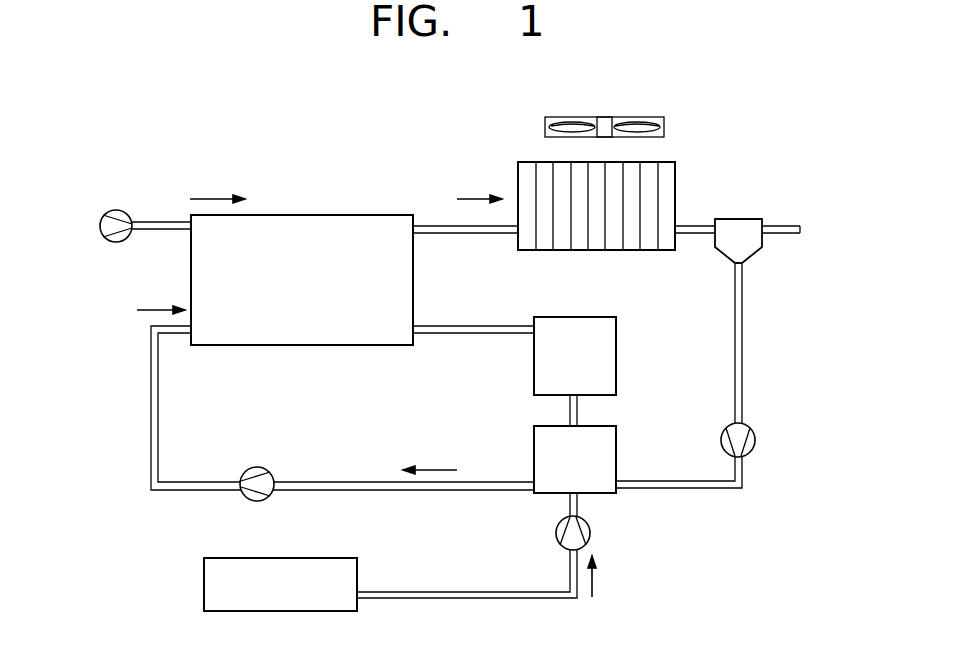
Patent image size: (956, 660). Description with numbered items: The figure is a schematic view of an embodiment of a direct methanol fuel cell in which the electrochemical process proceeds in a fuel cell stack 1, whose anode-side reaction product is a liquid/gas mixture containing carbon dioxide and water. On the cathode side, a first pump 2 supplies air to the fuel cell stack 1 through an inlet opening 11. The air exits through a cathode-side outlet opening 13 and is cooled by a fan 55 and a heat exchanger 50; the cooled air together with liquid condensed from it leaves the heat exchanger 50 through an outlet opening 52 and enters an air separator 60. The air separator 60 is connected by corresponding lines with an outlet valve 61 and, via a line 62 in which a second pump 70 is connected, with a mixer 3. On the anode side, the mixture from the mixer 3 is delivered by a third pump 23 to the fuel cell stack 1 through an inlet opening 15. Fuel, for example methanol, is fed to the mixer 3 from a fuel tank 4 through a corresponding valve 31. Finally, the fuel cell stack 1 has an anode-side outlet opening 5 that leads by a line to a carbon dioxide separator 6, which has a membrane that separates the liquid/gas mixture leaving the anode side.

The fuel cell stack 1 is at (302, 280).
The first pump 2 is at (118, 209).
The inlet opening 11 is at (166, 219).
The cathode-side outlet opening 13 is at (420, 225).
The heat exchanger 50 is at (669, 174).
The fan 55 is at (606, 117).
The outlet opening 52 is at (682, 231).
The air separator 60 is at (738, 241).
The outlet valve 61 is at (787, 226).
The line 62 is at (742, 331).
The second pump 70 is at (757, 441).
The outlet opening 5 is at (420, 340).
The CO2 separator 6 is at (575, 371).
The mixer 3 is at (575, 459).
The inlet opening 15 is at (178, 333).
The third pump 23 is at (244, 498).
The valve 31 is at (591, 533).
The fuel tank 4 is at (280, 584).